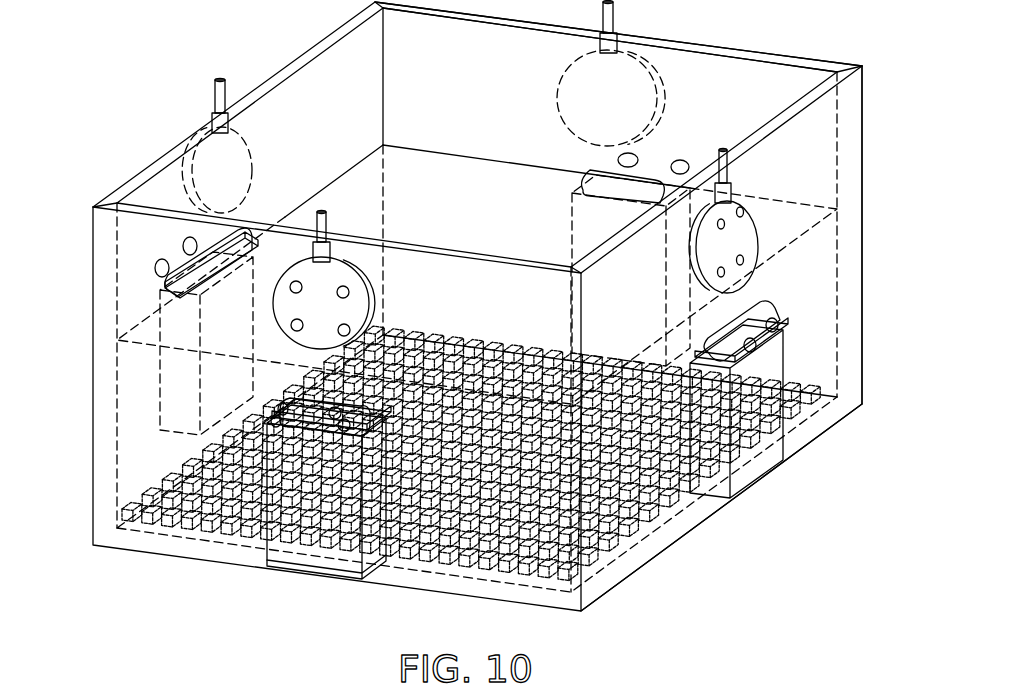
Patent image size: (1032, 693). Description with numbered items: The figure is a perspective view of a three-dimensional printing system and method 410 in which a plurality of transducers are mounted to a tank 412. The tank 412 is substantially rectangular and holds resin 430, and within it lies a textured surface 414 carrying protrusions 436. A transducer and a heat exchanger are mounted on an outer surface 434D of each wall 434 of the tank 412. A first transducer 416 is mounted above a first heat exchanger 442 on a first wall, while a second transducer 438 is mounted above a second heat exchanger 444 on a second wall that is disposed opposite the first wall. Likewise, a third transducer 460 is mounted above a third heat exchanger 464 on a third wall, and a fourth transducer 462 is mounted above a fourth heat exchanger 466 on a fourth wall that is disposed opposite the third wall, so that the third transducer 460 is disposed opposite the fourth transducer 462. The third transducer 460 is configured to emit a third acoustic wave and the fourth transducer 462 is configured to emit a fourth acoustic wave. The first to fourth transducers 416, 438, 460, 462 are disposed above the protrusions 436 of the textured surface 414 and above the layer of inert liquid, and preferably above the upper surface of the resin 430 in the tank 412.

The 3D printing system and method 410 is at (140, 107).
The tank 412 is at (721, 42).
The textured surface 414 is at (640, 520).
The first transducer 416 is at (248, 140).
The resin 430 is at (436, 176).
The wall 434 is at (867, 88).
The outer surface 434D is at (848, 352).
The protrusions 436 is at (443, 568).
The second transducer 438 is at (748, 225).
The first heat exchanger 442 is at (160, 388).
The second heat exchanger 444 is at (762, 468).
The third transducer 460 is at (340, 313).
The fourth transducer 462 is at (565, 72).
The third heat exchanger 464 is at (308, 568).
The fourth heat exchanger 466 is at (588, 217).